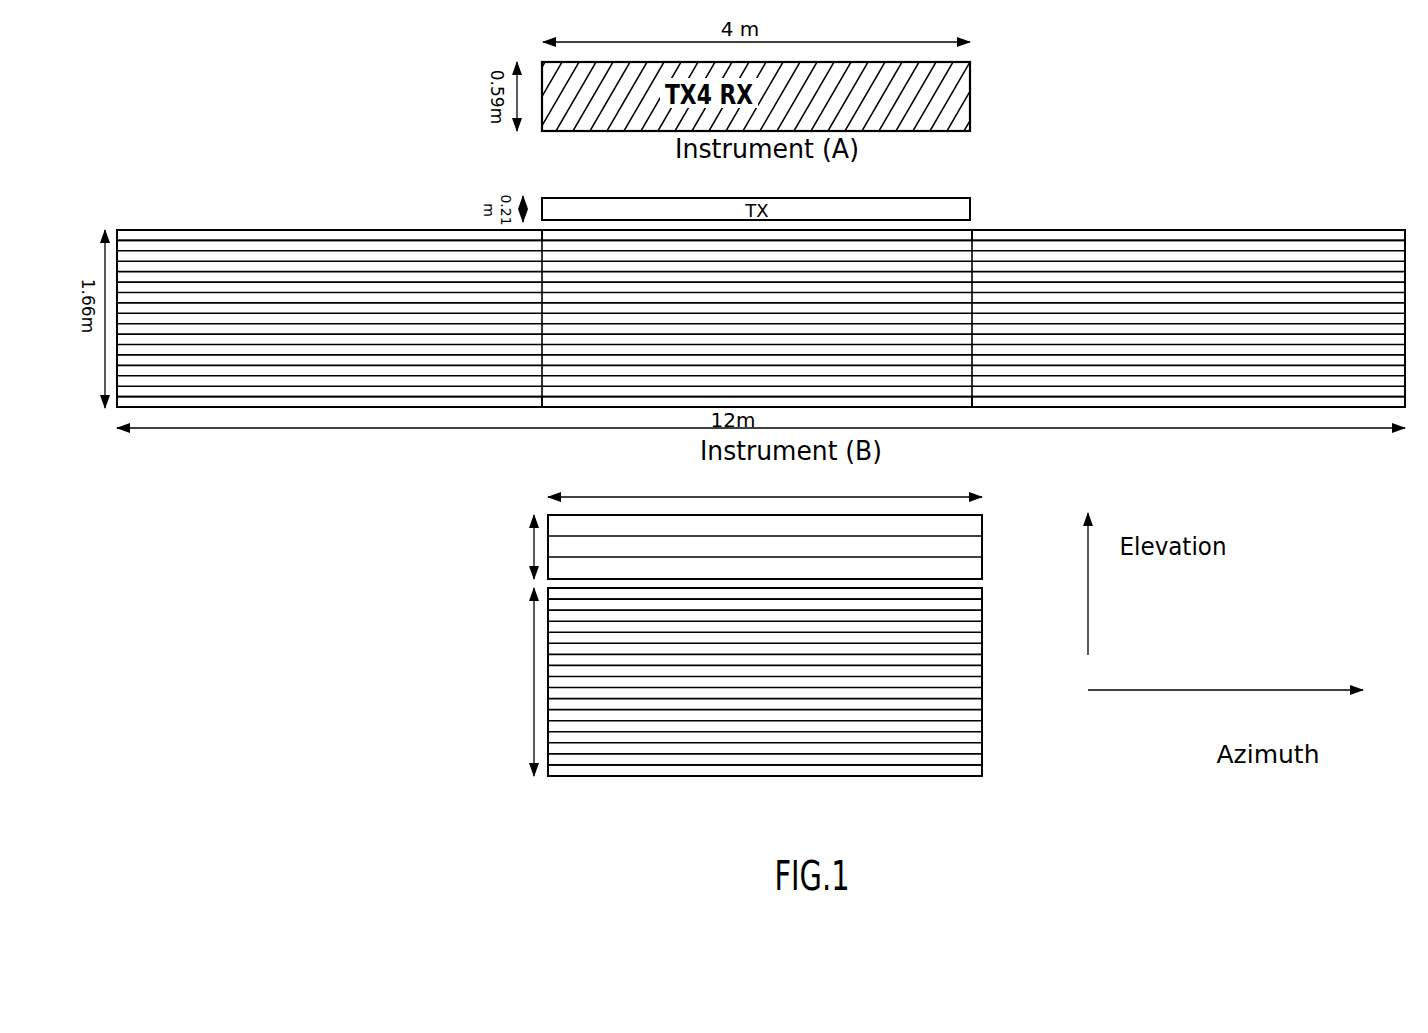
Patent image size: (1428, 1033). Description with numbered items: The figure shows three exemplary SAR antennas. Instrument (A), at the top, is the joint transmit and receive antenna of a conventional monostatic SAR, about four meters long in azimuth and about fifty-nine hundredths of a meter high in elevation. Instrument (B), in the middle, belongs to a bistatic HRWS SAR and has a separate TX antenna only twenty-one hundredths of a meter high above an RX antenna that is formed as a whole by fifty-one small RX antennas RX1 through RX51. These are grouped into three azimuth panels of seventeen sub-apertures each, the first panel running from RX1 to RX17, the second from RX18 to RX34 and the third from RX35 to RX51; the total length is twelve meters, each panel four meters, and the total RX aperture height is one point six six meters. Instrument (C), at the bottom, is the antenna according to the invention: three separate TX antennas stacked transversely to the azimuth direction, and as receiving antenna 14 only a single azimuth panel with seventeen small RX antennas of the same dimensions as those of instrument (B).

The small RX antenna RX1 is at (282, 235).
The small RX antenna RX17 is at (307, 400).
The small RX antenna RX18 is at (958, 236).
The small RX antenna RX34 is at (947, 400).
The small RX antenna RX35 is at (1238, 235).
The small RX antenna RX51 is at (1270, 398).
The receiving antenna 14 is at (501, 690).